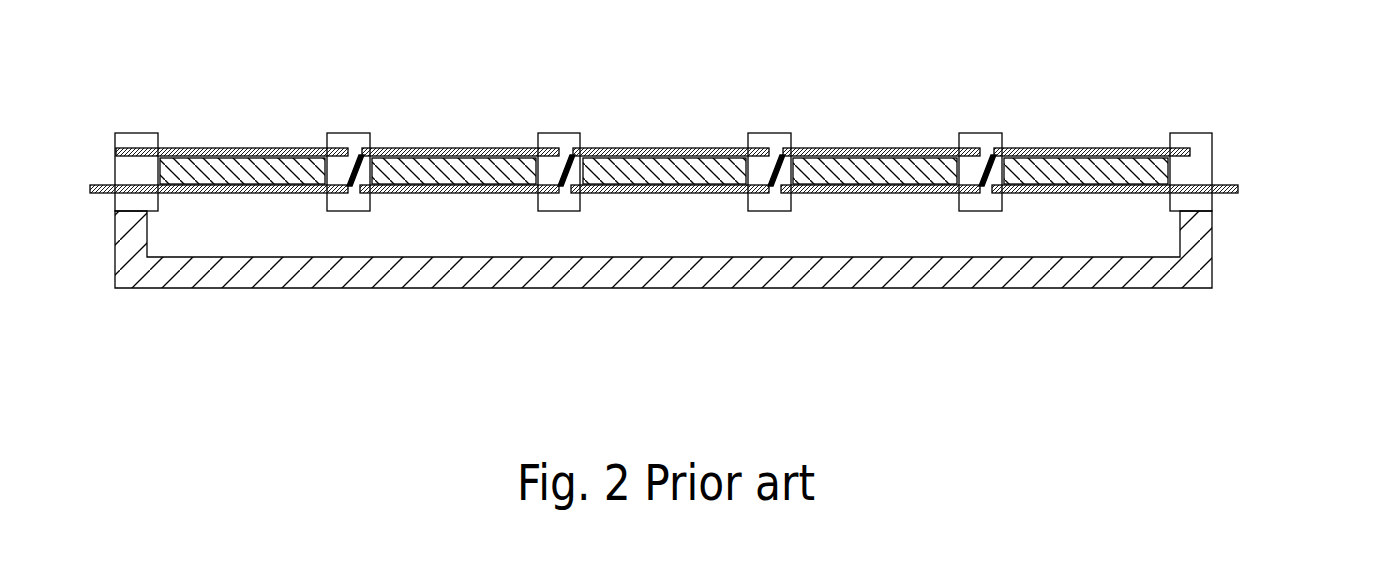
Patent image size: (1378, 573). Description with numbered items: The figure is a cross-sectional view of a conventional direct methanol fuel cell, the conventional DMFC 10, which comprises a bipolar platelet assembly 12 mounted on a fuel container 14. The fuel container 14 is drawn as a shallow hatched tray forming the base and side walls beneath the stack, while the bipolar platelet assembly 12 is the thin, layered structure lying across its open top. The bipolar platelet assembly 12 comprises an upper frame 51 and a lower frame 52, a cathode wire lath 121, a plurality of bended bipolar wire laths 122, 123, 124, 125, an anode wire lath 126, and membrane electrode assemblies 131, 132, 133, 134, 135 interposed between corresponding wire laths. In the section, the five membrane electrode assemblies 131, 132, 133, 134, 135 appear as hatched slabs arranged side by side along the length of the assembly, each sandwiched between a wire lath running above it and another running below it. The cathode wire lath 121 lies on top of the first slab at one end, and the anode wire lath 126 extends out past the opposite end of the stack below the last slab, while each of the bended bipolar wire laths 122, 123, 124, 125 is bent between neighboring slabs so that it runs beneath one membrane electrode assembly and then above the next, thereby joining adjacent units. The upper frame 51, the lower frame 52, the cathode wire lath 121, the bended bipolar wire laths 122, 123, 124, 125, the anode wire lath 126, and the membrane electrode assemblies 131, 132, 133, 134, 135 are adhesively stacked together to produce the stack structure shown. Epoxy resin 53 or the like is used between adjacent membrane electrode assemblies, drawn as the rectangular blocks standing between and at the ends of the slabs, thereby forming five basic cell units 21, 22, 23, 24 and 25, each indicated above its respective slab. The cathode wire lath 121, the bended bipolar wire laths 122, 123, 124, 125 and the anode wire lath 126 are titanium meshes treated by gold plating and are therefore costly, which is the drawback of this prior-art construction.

The conventional DMFC 10 is at (1295, 118).
The bipolar platelet assembly 12 is at (1245, 165).
The fuel container 14 is at (1222, 260).
The basic cell unit 21 is at (219, 151).
The basic cell unit 22 is at (459, 150).
The basic cell unit 23 is at (670, 150).
The basic cell unit 24 is at (880, 150).
The basic cell unit 25 is at (1138, 150).
The cathode wire lath 121 is at (290, 148).
The bended bipolar wire lath 122 is at (500, 148).
The bended bipolar wire lath 123 is at (712, 148).
The bended bipolar wire lath 124 is at (923, 148).
The bended bipolar wire lath 125 is at (1133, 148).
The anode wire lath 126 is at (1235, 190).
The membrane electrode assembly 131 is at (240, 172).
The membrane electrode assembly 132 is at (452, 172).
The membrane electrode assembly 133 is at (662, 172).
The membrane electrode assembly 134 is at (872, 172).
The membrane electrode assembly 135 is at (1082, 172).
The upper frame 51 is at (138, 133).
The lower frame 52 is at (125, 200).
The epoxy resin 53 is at (127, 170).